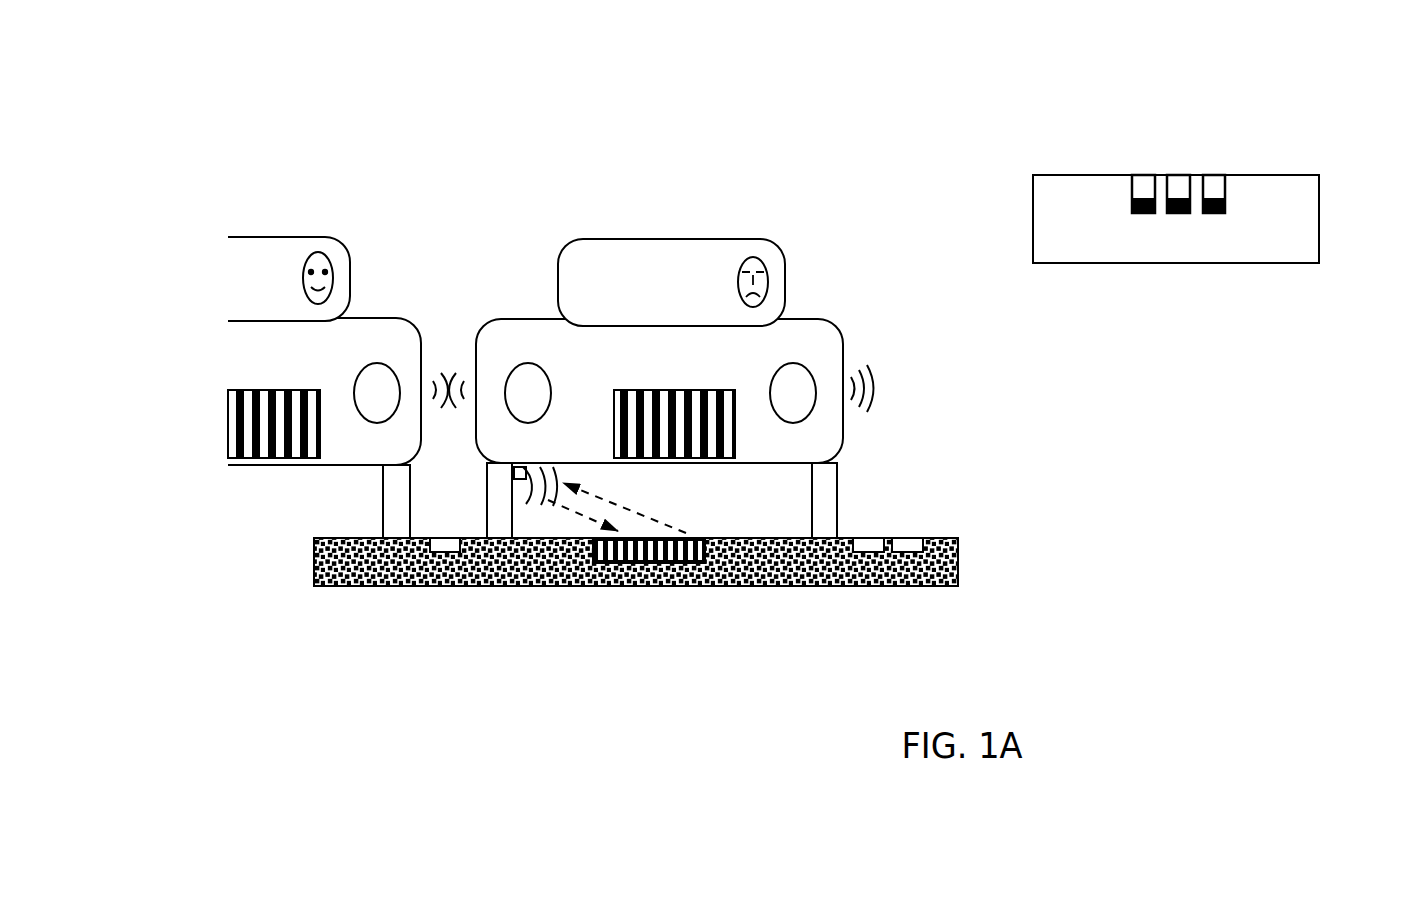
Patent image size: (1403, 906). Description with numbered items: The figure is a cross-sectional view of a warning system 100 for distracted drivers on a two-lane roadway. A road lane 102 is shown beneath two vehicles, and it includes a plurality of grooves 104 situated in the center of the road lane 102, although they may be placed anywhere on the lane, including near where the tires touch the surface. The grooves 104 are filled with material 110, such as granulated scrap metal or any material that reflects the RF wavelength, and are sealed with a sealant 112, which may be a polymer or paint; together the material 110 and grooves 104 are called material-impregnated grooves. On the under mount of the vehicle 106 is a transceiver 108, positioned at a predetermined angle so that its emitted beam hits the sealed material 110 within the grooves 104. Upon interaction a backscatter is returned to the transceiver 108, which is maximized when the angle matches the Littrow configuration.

The warning system 100 is at (245, 205).
The road lane 102 is at (430, 638).
The grooves 104 is at (1250, 195).
The vehicle 106 is at (660, 422).
The transceiver 108 is at (523, 485).
The material 110 is at (1184, 215).
The sealant 112 is at (1230, 186).